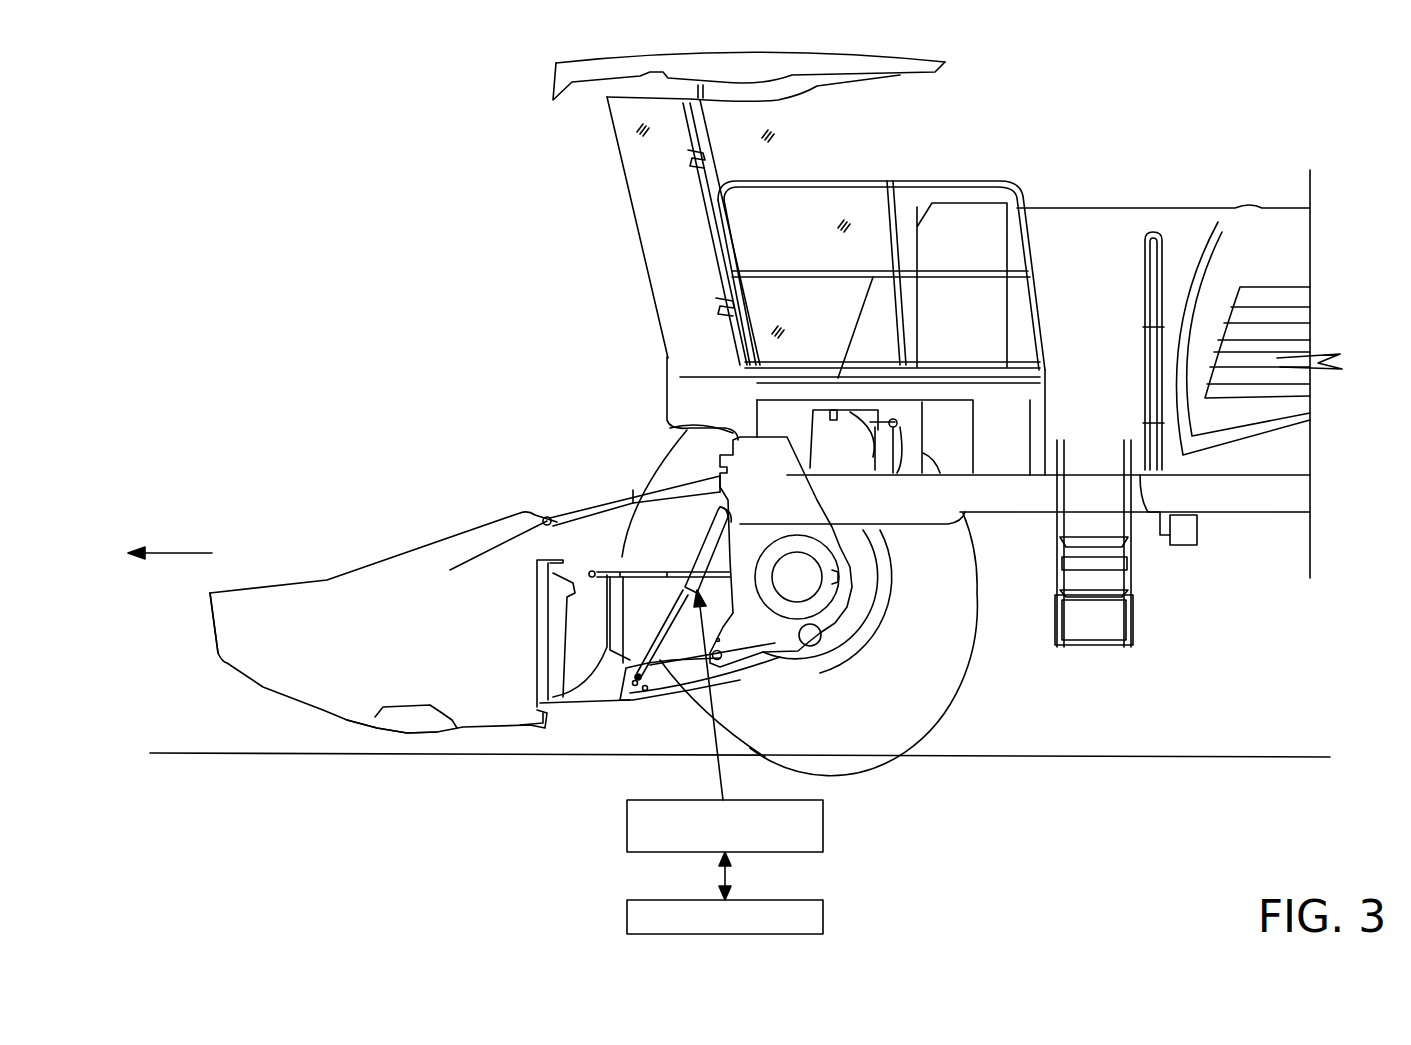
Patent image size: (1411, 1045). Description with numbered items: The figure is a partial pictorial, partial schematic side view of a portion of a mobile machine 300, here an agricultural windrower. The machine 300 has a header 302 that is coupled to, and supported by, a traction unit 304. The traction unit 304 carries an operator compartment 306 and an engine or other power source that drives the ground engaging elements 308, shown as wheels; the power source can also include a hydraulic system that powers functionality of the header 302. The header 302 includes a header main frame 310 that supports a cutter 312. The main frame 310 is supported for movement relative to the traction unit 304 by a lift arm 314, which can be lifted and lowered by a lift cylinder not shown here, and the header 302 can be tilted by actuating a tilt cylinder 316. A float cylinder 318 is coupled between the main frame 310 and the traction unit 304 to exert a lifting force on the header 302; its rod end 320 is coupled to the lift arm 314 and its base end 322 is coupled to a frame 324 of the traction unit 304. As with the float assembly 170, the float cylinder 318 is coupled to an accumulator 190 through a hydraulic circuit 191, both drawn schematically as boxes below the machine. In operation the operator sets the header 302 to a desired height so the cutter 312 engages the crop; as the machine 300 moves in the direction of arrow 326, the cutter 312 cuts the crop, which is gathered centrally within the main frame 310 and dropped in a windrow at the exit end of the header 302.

The mobile machine 300 is at (1076, 72).
The header 302 is at (255, 583).
The traction unit 304 is at (1040, 180).
The operator compartment 306 is at (877, 60).
The ground engaging elements 308 is at (937, 690).
The header main frame 310 is at (212, 630).
The cutter 312 is at (407, 733).
The lift arm 314 is at (647, 703).
The tilt cylinder 316 is at (600, 497).
The float cylinder 318 is at (718, 584).
The rod end 320 is at (690, 600).
The base end 322 is at (712, 545).
The frame 324 is at (792, 504).
The arrow 326 is at (170, 546).
The float assembly 170 is at (512, 757).
The accumulator 190 is at (725, 893).
The hydraulic circuit 191 is at (725, 721).